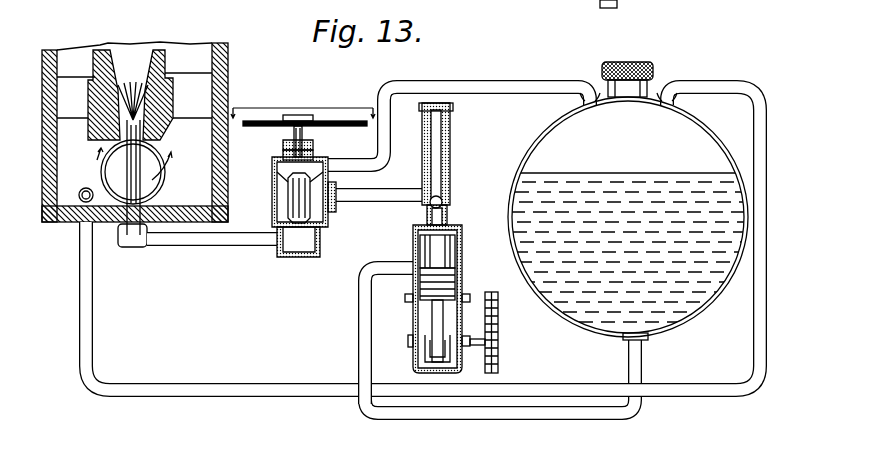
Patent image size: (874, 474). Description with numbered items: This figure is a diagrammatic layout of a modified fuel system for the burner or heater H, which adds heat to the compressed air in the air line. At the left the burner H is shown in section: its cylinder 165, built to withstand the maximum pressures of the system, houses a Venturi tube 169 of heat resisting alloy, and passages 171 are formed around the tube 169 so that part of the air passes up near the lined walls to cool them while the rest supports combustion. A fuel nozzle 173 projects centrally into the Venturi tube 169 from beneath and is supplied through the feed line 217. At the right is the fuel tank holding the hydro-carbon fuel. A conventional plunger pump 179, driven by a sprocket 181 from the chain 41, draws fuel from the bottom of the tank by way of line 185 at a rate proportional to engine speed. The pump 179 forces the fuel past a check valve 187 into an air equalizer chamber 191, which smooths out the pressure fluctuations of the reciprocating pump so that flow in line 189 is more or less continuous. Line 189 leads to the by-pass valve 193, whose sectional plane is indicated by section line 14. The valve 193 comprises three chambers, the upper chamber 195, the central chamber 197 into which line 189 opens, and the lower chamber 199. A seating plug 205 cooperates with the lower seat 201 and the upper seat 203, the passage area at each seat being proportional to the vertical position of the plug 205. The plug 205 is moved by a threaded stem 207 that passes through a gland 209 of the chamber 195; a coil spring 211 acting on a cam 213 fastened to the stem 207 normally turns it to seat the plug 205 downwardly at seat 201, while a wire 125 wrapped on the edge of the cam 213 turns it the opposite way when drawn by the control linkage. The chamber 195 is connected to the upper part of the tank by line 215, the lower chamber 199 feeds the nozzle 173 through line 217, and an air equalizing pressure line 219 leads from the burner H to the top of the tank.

The section line 14 is at (304, 103).
The chain 41 is at (498, 301).
The wire 125 is at (345, 121).
The cylinder 165 is at (80, 173).
The Venturi tube 169 is at (170, 57).
The passages 171 is at (62, 97).
The fuel nozzle 173 is at (127, 133).
The plunger pump 179 is at (448, 243).
The sprocket 181 is at (498, 350).
The line 185 is at (450, 418).
The check valve 187 is at (447, 200).
The line 189 is at (400, 203).
The air equalizer chamber 191 is at (450, 128).
The by-pass valve 193 is at (269, 209).
The chamber 195 is at (285, 165).
The central chamber 197 is at (263, 238).
The lower chamber 199 is at (293, 246).
The lower valve seat 201 is at (318, 250).
The valve seat 203 is at (280, 183).
The seating plug 205 is at (305, 208).
The threaded stem 207 is at (292, 134).
The gland 209 is at (312, 143).
The coil spring 211 is at (330, 120).
The cam 213 is at (273, 120).
The line 215 is at (515, 87).
The feed line 217 is at (150, 246).
The air equalizing pressure line 219 is at (188, 398).
The burner H is at (72, 53).